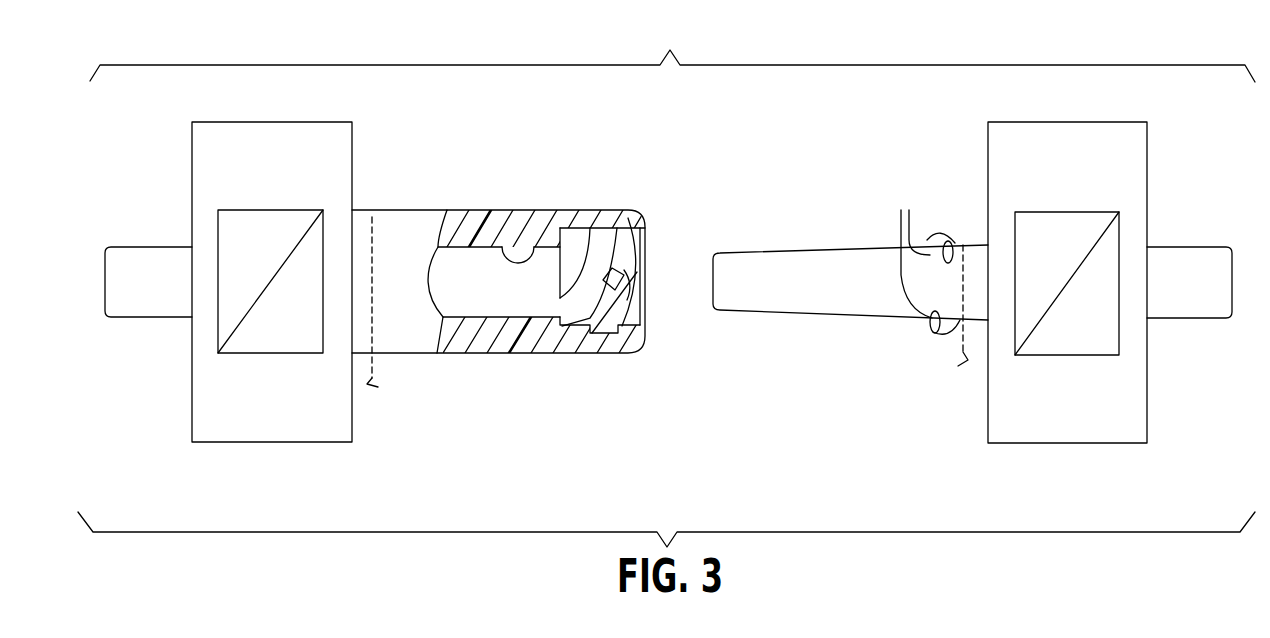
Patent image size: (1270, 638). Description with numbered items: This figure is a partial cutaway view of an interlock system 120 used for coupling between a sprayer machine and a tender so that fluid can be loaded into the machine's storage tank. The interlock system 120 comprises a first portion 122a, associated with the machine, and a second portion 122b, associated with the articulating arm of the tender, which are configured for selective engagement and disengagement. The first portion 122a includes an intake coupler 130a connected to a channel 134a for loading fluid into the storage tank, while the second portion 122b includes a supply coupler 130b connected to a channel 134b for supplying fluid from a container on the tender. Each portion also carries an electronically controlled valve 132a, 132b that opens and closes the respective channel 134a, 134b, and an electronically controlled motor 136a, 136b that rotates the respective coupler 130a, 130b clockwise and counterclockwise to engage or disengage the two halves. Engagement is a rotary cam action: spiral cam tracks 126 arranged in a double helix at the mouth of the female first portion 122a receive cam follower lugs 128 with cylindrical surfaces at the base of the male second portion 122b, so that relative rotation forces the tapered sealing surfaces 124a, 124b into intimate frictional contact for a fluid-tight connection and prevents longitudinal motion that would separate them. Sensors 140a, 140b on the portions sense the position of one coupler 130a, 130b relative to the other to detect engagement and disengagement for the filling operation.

The interlock system 120 is at (672, 50).
The first portion 122a is at (497, 366).
The second portion 122b is at (770, 348).
The tapered sealing surface 124a is at (533, 243).
The tapered sealing surface 124b is at (835, 268).
The spiral cam tracks 126 is at (612, 278).
The cam follower lugs 128 is at (926, 258).
The intake coupler 130a is at (612, 188).
The supply coupler 130b is at (755, 214).
The electronically controlled valve 132a is at (267, 209).
The electronically controlled valve 132b is at (1063, 211).
The channel 134a is at (140, 267).
The channel 134b is at (1195, 262).
The electronically controlled motor 136a is at (271, 121).
The electronically controlled motor 136b is at (1067, 121).
The sensor 140a is at (380, 386).
The sensor 140b is at (958, 358).